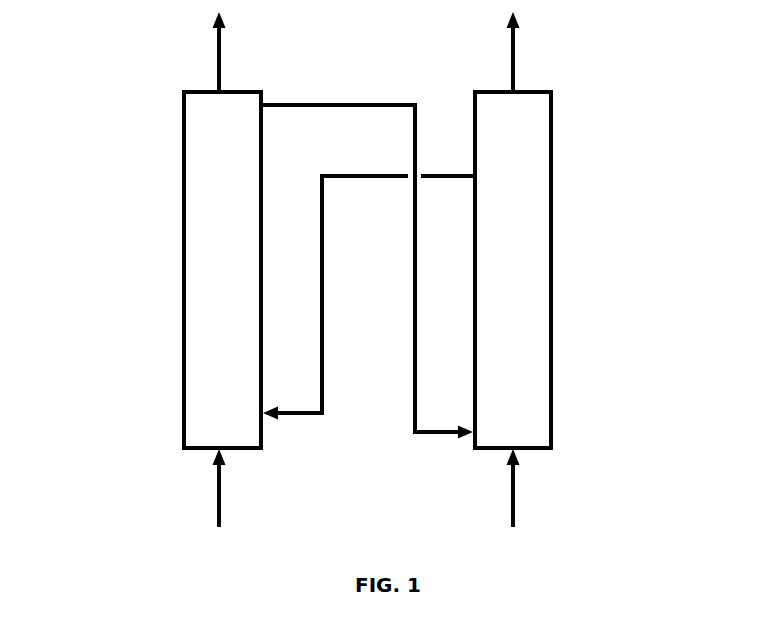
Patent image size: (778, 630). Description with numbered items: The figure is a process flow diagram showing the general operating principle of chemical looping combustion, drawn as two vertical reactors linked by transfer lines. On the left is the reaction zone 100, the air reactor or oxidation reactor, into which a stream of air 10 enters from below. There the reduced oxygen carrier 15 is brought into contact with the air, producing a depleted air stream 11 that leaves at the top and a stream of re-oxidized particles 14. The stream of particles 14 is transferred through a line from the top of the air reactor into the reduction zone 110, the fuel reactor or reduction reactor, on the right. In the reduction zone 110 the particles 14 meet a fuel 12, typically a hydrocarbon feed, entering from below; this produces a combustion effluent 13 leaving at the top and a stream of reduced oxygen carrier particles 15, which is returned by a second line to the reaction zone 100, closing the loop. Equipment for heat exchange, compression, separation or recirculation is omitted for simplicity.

The reaction zone 100 is at (202, 218).
The reduction zone 110 is at (527, 197).
The stream of air 10 is at (219, 493).
The depleted air stream 11 is at (219, 55).
The fuel 12 is at (515, 490).
The combustion effluent 13 is at (513, 62).
The stream of re-oxidized particles 14 is at (282, 104).
The reduced oxygen carrier 15 is at (297, 415).